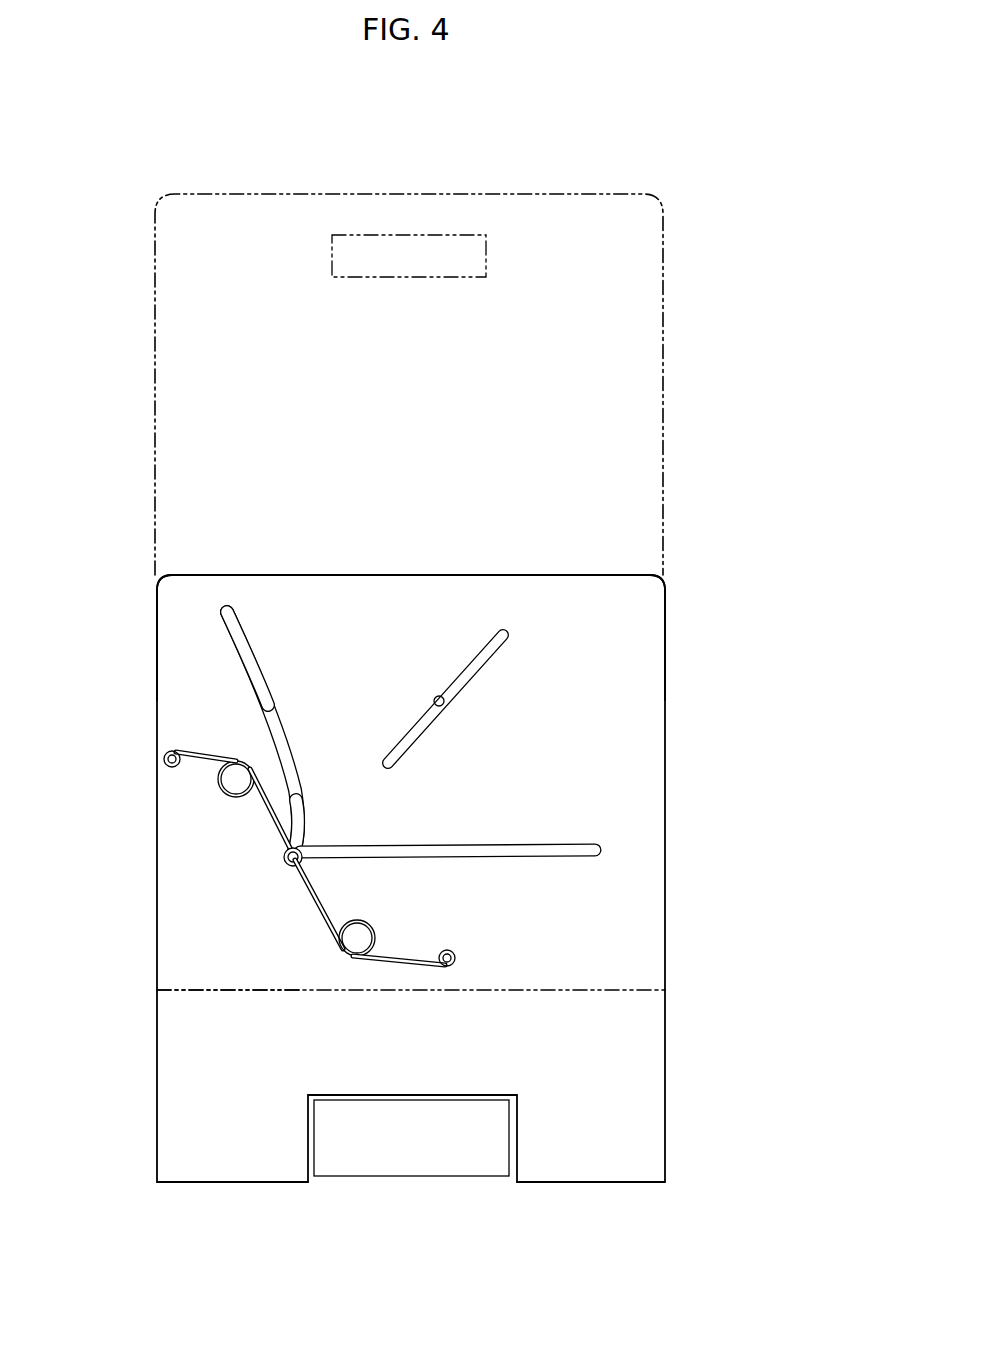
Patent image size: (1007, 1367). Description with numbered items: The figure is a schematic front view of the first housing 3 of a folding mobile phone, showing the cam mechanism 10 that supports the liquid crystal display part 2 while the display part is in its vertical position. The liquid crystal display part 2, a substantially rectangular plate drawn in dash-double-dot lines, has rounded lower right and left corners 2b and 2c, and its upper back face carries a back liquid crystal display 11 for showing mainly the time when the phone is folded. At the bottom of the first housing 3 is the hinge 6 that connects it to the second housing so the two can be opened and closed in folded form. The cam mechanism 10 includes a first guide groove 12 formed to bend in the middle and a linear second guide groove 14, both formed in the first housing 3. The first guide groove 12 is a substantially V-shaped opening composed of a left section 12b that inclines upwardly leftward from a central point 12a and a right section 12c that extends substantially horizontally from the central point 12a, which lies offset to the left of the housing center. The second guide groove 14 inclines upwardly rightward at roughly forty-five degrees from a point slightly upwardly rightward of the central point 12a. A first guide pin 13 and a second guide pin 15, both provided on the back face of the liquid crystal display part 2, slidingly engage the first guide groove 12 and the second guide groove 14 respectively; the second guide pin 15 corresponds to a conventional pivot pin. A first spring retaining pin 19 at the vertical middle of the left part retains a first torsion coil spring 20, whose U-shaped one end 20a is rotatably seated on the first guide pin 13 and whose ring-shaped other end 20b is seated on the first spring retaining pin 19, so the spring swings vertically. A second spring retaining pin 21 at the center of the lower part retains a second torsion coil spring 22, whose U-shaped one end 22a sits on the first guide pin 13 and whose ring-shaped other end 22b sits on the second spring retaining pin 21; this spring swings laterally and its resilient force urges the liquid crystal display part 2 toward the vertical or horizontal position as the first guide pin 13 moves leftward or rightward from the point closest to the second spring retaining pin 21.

The liquid crystal display part 2 is at (665, 258).
The lower right corner 2b is at (665, 990).
The lower left corner 2c is at (157, 988).
The first housing 3 is at (665, 752).
The hinge 6 is at (412, 1177).
The cam mechanism 10 is at (627, 676).
The back liquid crystal display 11 is at (443, 235).
The first guide groove 12 is at (268, 685).
The central point 12a is at (287, 865).
The left section 12b is at (250, 672).
The right section 12c is at (532, 860).
The first guide pin 13 is at (284, 857).
The second guide groove 14 is at (472, 672).
The second guide pin 15 is at (440, 707).
The first spring retaining pin 19 is at (163, 760).
The first torsion coil spring 20 is at (218, 790).
The one end of first torsion coil spring 20a is at (270, 811).
The other end of first torsion coil spring 20b is at (208, 758).
The second spring retaining pin 21 is at (450, 966).
The second torsion coil spring 22 is at (388, 964).
The one end of second torsion coil spring 22a is at (312, 889).
The other end of second torsion coil spring 22b is at (405, 960).